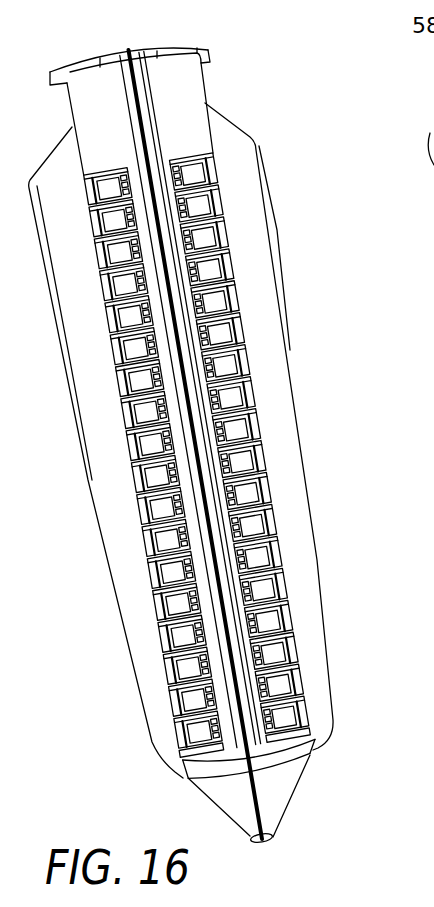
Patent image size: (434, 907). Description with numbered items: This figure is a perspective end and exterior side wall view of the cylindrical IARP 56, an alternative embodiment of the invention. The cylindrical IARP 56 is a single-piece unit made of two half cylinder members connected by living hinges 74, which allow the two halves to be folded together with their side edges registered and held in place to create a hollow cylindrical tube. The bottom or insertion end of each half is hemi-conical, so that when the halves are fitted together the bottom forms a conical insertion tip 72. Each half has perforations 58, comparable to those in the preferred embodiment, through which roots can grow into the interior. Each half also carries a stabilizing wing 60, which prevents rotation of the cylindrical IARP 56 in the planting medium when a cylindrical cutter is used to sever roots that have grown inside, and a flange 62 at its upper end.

The cylindrical IARP 56 is at (301, 326).
The perforations 58 is at (258, 540).
The stabilizing wing 60 is at (298, 437).
The flange 62 is at (211, 45).
The conical insertion tip 72 is at (282, 808).
The living hinges 74 is at (128, 48).